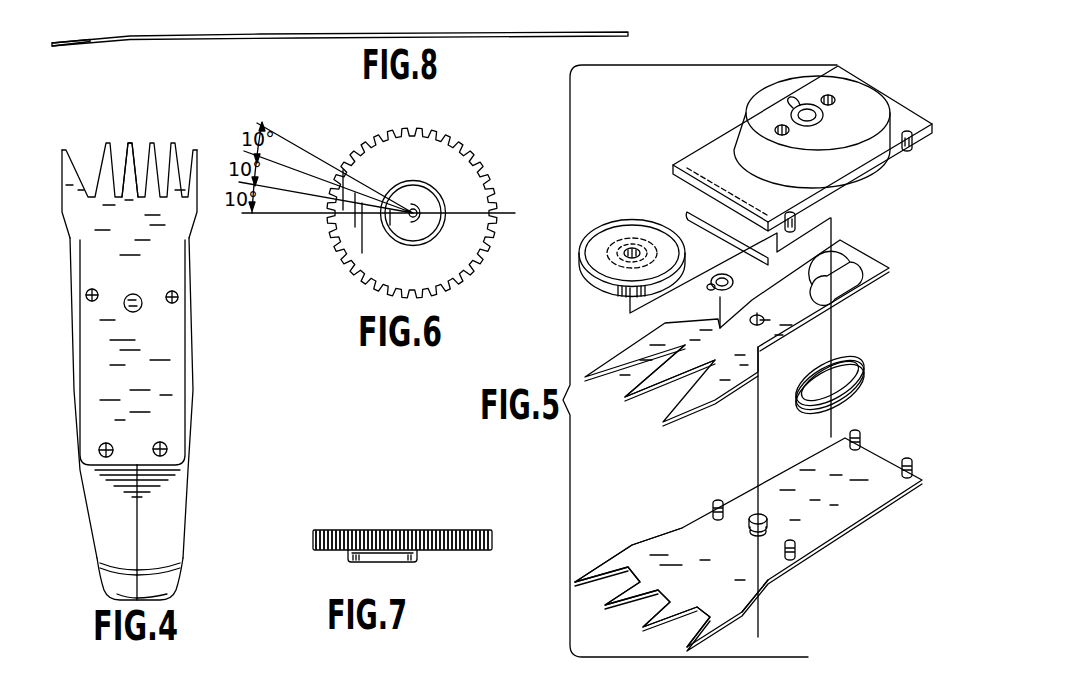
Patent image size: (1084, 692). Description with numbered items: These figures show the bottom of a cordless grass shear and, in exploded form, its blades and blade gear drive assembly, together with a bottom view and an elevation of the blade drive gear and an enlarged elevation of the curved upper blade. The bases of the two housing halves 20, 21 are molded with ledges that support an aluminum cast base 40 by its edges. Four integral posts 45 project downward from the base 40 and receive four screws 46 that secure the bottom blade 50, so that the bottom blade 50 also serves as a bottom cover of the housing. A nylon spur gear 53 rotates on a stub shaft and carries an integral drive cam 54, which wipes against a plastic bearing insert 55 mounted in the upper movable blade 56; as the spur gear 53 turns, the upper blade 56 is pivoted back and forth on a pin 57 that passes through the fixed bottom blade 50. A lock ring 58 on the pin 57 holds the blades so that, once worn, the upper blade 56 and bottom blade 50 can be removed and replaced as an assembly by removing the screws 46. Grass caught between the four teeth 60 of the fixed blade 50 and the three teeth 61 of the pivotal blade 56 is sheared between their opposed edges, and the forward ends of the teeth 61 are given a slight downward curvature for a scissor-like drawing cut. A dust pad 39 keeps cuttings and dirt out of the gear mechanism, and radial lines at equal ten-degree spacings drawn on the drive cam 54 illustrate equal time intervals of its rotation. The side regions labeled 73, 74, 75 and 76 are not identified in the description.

In FIG. 4, the housing half 20 is at (122, 537).
In FIG. 4, the housing half 21 is at (171, 537).
In FIG. 5, the dust pad 39 is at (726, 238).
In FIG. 5, the base 40 is at (918, 122).
In FIG. 5, the post 45 is at (901, 150).
In FIG. 4, the screw 46 is at (92, 289).
In FIG. 5, the screw 46 is at (858, 436).
In FIG. 4, the bottom blade 50 is at (148, 385).
In FIG. 5, the bottom blade 50 is at (845, 509).
In FIG. 6, the spur gear 53 is at (383, 262).
In FIG. 7, the spur gear 53 is at (325, 530).
In FIG. 5, the spur gear 53 is at (628, 230).
In FIG. 6, the drive cam 54 is at (402, 182).
In FIG. 7, the drive cam 54 is at (373, 560).
In FIG. 5, the bearing insert 55 is at (858, 366).
In FIG. 8, the upper movable blade 56 is at (300, 41).
In FIG. 5, the upper movable blade 56 is at (748, 353).
In FIG. 4, the pin 57 is at (128, 307).
In FIG. 5, the pin 57 is at (750, 528).
In FIG. 5, the lock ring 58 is at (710, 285).
In FIG. 4, the teeth of fixed lower blade 60 is at (107, 143).
In FIG. 5, the teeth of fixed lower blade 60 is at (612, 605).
In FIG. 4, the teeth of pivotal upper blade 61 is at (131, 152).
In FIG. 8, the teeth of pivotal upper blade 61 is at (88, 37).
In FIG. 5, the teeth of pivotal upper blade 61 is at (634, 399).
In FIG. 4, the housing side wall 73 is at (80, 340).
In FIG. 4, the housing side wall 74 is at (189, 340).
In FIG. 4, the blade side edge 75 is at (63, 233).
In FIG. 5, the blade side edge 75 is at (650, 538).
In FIG. 4, the blade side edge 76 is at (193, 233).
In FIG. 5, the blade side edge 76 is at (770, 583).